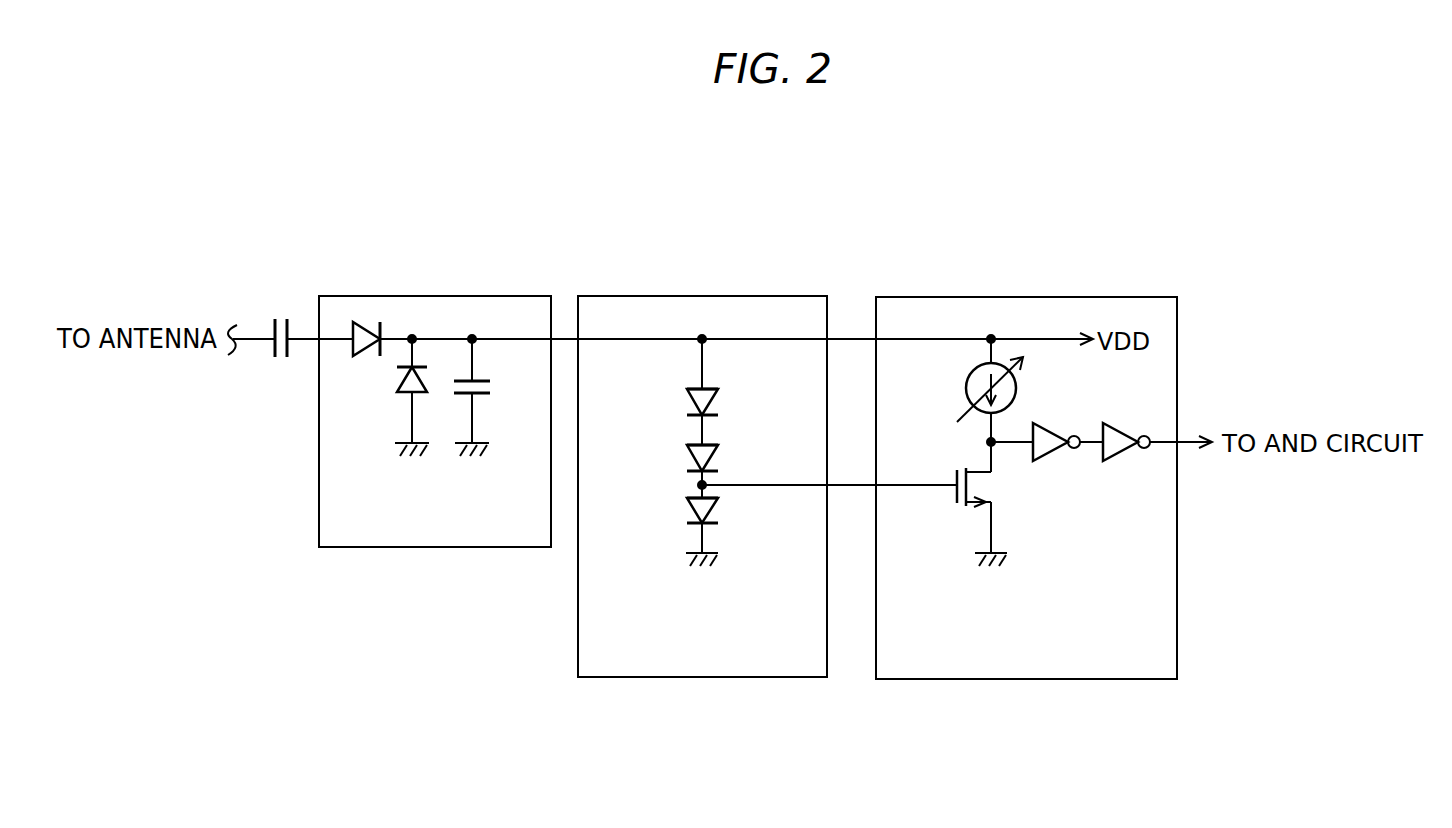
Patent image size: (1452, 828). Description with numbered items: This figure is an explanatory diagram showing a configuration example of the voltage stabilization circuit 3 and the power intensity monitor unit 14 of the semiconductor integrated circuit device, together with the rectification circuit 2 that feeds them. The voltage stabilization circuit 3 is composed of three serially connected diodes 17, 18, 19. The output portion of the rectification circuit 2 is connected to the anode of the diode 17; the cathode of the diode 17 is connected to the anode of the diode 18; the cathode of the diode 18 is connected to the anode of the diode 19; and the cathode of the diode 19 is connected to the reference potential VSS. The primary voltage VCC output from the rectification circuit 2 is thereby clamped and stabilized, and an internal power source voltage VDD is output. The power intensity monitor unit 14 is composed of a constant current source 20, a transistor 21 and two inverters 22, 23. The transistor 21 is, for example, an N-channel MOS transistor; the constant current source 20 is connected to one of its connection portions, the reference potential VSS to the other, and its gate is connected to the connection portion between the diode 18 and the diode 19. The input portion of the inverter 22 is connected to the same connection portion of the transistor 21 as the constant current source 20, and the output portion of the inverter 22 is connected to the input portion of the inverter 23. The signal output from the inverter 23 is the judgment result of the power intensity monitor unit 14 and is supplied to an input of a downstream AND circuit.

The rectification circuit 2 is at (516, 296).
The voltage stabilization circuit 3 is at (702, 447).
The power intensity monitor unit 14 is at (1044, 450).
The diode 17 is at (718, 391).
The diode 18 is at (718, 446).
The diode 19 is at (718, 510).
The constant current source 20 is at (1016, 383).
The transistor 21 is at (985, 497).
The inverter 22 is at (1058, 423).
The inverter 23 is at (1123, 461).